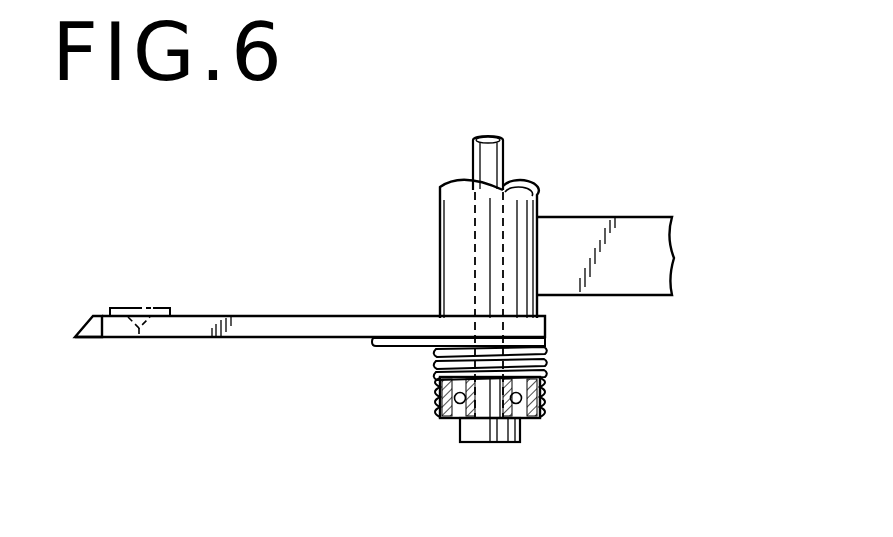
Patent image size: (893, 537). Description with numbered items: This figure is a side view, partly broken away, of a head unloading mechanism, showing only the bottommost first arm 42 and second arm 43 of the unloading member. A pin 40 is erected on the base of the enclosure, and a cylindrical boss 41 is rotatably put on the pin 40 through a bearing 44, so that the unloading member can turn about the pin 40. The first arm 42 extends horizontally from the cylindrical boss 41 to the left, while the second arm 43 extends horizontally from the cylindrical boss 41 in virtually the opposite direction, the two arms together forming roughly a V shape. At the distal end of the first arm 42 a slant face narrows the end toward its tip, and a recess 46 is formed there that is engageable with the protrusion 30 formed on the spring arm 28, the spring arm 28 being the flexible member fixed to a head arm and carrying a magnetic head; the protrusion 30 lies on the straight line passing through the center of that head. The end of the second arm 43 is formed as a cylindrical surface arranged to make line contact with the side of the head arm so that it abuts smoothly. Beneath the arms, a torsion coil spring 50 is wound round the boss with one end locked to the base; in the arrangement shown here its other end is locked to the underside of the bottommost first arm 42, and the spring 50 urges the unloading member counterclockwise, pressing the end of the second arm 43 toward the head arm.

The spring arm 28 is at (122, 308).
The protrusion 30 is at (139, 316).
The pin 40 is at (503, 152).
The cylindrical boss 41 is at (447, 228).
The first arm 42 is at (273, 318).
The second arm 43 is at (645, 232).
The bearing 44 is at (440, 412).
The recess 46 is at (139, 338).
The torsion coil spring 50 is at (547, 360).